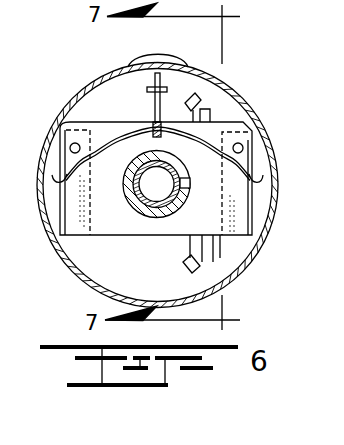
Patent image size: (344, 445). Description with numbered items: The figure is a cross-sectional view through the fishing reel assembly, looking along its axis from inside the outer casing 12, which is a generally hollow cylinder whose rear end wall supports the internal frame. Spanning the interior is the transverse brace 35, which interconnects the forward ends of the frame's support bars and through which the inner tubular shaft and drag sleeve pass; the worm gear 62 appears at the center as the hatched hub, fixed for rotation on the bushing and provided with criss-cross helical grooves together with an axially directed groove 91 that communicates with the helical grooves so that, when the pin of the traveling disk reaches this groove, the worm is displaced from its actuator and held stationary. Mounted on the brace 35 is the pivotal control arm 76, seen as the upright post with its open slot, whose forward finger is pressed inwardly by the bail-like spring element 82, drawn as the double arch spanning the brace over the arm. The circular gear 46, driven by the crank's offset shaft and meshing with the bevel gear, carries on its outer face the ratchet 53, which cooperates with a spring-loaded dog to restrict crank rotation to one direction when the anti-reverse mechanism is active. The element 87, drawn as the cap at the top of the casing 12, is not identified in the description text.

The housing 12 is at (76, 95).
The mounting plate 35 is at (77, 228).
The bracket 46 is at (202, 102).
The clip 53 is at (203, 260).
The hub 62 is at (150, 213).
The post 76 is at (153, 108).
The spring 82 is at (212, 138).
The cap 87 is at (135, 56).
The bushing 91 is at (187, 183).